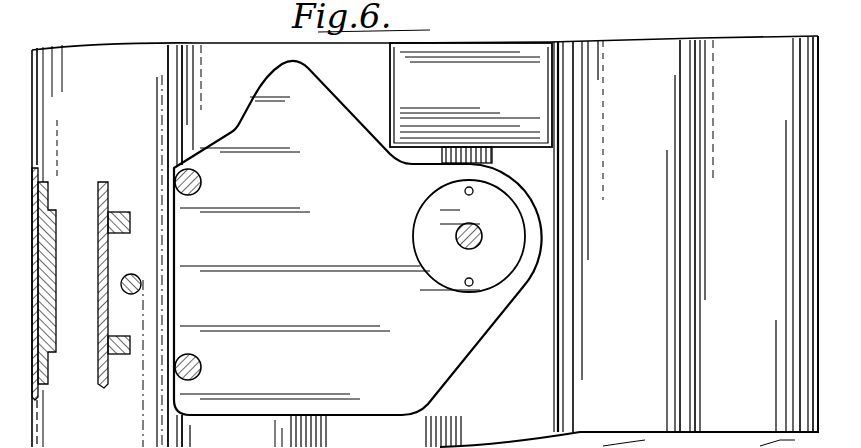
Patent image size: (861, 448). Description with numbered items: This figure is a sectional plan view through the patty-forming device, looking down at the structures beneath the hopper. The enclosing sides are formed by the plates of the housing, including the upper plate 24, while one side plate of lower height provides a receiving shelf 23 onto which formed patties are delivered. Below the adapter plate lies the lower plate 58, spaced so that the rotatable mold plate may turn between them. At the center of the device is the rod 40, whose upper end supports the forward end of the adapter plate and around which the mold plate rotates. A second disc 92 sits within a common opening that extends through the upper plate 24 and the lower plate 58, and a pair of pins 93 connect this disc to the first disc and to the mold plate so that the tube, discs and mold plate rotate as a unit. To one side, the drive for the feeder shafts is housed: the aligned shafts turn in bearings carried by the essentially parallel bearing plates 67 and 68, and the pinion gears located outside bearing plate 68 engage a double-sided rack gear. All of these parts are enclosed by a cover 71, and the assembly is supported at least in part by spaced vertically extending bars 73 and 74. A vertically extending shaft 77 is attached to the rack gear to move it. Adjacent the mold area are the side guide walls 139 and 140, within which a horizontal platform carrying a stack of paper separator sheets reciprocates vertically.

The receiving shelf 23 is at (727, 245).
The upper plate 24 is at (172, 55).
The rod 40 is at (478, 230).
The lower plate 58 is at (310, 135).
The bearing plate 67 is at (46, 186).
The bearing plate 68 is at (106, 182).
The cover 71 is at (36, 168).
The vertically extending bar 73 is at (122, 210).
The vertically extending bar 74 is at (124, 356).
The vertically extending shaft 77 is at (134, 274).
The second disc 92 is at (505, 253).
The pins 93 is at (462, 189).
The side guide wall 139 is at (452, 145).
The side guide wall 140 is at (550, 80).